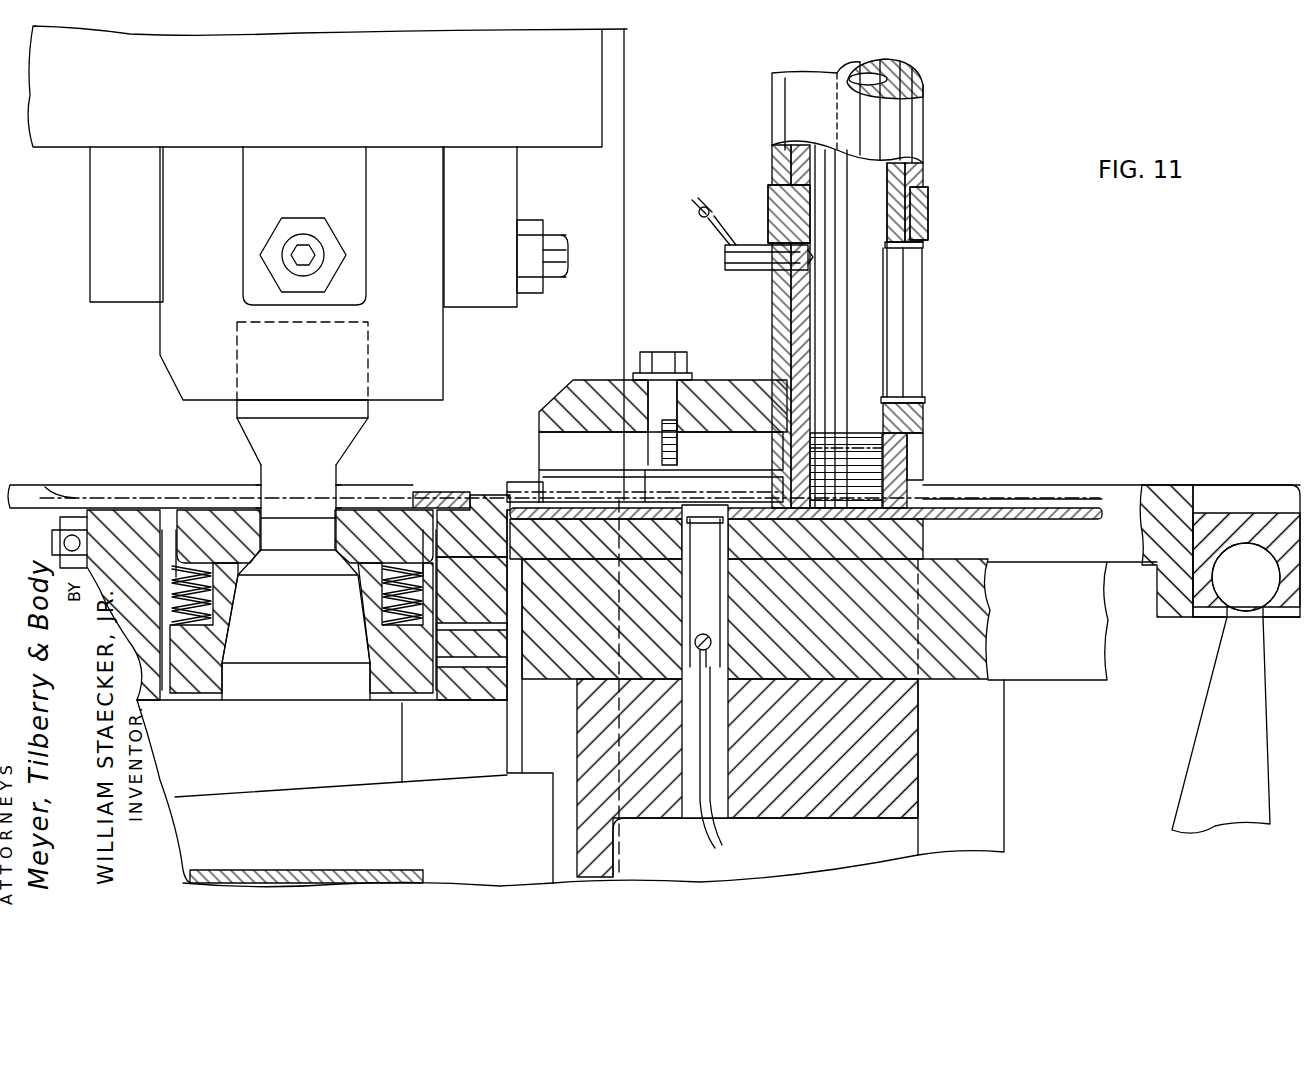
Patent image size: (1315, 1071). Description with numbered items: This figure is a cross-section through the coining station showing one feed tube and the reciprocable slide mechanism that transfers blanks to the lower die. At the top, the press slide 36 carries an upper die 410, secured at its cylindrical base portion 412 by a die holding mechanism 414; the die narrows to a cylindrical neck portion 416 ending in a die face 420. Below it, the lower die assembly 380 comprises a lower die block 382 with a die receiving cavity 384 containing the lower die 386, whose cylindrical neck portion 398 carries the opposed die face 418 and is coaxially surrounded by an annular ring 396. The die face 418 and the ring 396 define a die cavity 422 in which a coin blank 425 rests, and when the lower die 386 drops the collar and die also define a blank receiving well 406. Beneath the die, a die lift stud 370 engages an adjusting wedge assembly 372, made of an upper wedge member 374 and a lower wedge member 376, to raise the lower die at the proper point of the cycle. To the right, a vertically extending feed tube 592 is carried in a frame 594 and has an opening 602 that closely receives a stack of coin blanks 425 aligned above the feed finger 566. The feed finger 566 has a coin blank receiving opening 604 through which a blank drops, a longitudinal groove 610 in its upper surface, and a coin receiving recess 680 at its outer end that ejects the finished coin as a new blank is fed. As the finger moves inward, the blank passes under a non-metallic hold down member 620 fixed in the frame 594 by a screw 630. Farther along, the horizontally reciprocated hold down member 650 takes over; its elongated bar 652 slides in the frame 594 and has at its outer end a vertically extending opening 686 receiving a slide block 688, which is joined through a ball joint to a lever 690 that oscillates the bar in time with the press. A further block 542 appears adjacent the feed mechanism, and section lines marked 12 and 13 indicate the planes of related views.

The slide 36 is at (563, 147).
The die holding mechanism 414 is at (460, 307).
The cylindrical base portion 412 is at (368, 404).
The upper die 410 is at (355, 437).
The cylindrical neck portion 416 is at (261, 478).
The die face 418 is at (266, 492).
The coin blank 425 is at (297, 525).
The die cavity 422 is at (125, 508).
The lower die assembly 380 is at (364, 479).
The coin receiving recess 680 is at (452, 508).
The horizontally reciprocated hold down member 650 is at (515, 462).
The blank receiving well 406 is at (343, 518).
The cylindrical neck portion 398 is at (357, 548).
The annular ring 396 is at (440, 527).
The die receiving cavity 384 is at (440, 577).
The lower die 386 is at (373, 645).
The die face 420 is at (300, 562).
The upper wedge member 374 is at (402, 728).
The adjusting wedge assembly 372 is at (422, 764).
The die lift stud 370 is at (323, 873).
The lower wedge member 376 is at (555, 847).
The lower die block 382 is at (522, 593).
The hold down member 620 is at (595, 505).
The screw 630 is at (660, 352).
The frame 594 is at (710, 378).
The opening 602 is at (880, 232).
The feed tube 592 is at (923, 168).
The coin blank receiving opening 604 is at (882, 510).
The longitudinal groove 610 is at (990, 497).
The elongated bar 652 is at (1125, 485).
The vertically extending opening 686 is at (1203, 485).
The slide block 688 is at (1222, 513).
The feed finger 566 is at (1015, 520).
The table block 542 is at (1045, 682).
The lever 690 is at (1197, 742).
The section line 12- 12 is at (530, 258).
The section line 13- 13 is at (552, 347).